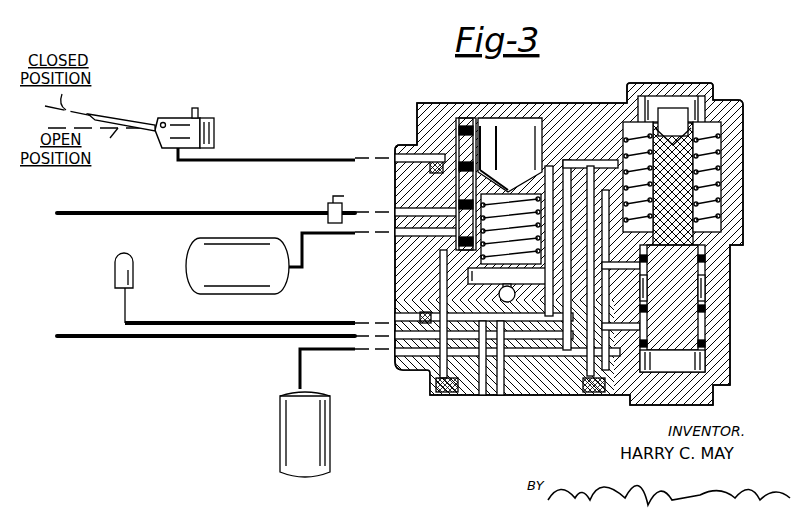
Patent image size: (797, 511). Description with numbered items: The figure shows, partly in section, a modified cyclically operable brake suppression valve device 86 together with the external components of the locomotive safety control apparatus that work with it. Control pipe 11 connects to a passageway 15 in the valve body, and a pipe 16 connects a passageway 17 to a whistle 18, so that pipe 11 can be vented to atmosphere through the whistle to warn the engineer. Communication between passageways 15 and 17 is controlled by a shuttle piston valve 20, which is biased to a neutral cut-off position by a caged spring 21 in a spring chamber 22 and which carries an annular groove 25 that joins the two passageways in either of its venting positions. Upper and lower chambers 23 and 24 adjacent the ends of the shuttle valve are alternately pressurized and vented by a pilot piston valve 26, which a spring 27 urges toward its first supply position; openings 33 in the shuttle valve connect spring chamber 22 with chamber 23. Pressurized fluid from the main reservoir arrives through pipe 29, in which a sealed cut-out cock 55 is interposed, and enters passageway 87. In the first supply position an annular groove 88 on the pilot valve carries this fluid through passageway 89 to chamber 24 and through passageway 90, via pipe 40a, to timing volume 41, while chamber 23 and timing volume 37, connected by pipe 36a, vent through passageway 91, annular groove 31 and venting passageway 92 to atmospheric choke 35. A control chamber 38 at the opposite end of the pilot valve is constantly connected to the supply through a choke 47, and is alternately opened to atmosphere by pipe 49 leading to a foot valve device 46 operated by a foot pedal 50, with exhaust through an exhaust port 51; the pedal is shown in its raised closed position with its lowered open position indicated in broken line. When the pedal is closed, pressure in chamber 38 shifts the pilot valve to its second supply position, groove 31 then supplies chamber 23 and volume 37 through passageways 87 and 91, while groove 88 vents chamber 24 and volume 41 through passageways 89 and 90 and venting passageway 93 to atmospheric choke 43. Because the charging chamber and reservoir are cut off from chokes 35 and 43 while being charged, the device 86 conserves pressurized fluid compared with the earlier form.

The pipe 11 is at (112, 338).
The passageway 15 is at (500, 396).
The pipe 16 is at (152, 322).
The passageway 17 is at (482, 395).
The whistle 18 is at (114, 264).
The shuttle piston valve 20 is at (700, 263).
The caged spring 21 is at (712, 176).
The spring chamber 22 is at (712, 194).
The upper chamber 23 is at (698, 105).
The lower chamber 24 is at (706, 359).
The annular groove 25 is at (706, 294).
The pilot piston valve 26 is at (484, 118).
The spring 27 is at (509, 215).
The pipe 29 is at (148, 212).
The annular groove 31 is at (484, 164).
The openings 33 is at (673, 177).
The atmospheric choke 35 is at (593, 396).
The pipe 36a is at (330, 354).
The timing volume 37 is at (326, 470).
The control chamber 38 is at (530, 130).
The pipe 40a is at (330, 238).
The timing volume 41 is at (282, 282).
The atmospheric choke 43 is at (446, 393).
The foot valve device 46 is at (176, 118).
The choke 47 is at (424, 186).
The pipe 49 is at (305, 160).
The foot pedal 50 is at (120, 116).
The exhaust port 51 is at (198, 112).
The cut-out cock 55 is at (326, 203).
The suppression valve device 86 is at (416, 103).
The passageway 87 is at (410, 211).
The annular groove 88 is at (410, 230).
The passageway 89 is at (614, 392).
The passageway 90 is at (415, 236).
The passageway 91 is at (520, 395).
The venting passageway 92 is at (586, 392).
The venting passageway 93 is at (436, 378).